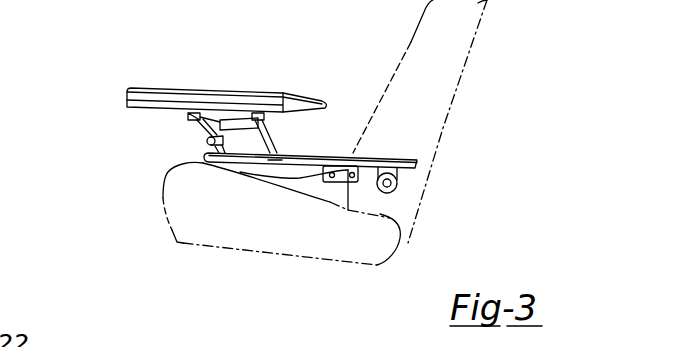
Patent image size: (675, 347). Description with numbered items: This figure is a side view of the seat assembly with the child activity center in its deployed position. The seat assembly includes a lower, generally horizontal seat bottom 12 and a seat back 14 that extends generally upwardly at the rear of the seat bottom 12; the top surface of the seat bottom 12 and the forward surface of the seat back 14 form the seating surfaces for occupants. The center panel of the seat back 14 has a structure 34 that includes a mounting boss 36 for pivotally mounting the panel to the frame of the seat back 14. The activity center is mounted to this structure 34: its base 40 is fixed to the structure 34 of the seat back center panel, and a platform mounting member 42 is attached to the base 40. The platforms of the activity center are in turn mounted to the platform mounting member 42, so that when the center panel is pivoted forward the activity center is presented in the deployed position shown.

The seat bottom 12 is at (200, 213).
The seat back 14 is at (443, 48).
The structure 34 is at (275, 163).
The mounting boss 36 is at (397, 178).
The base 40 is at (312, 173).
The platform mounting member 42 is at (133, 110).